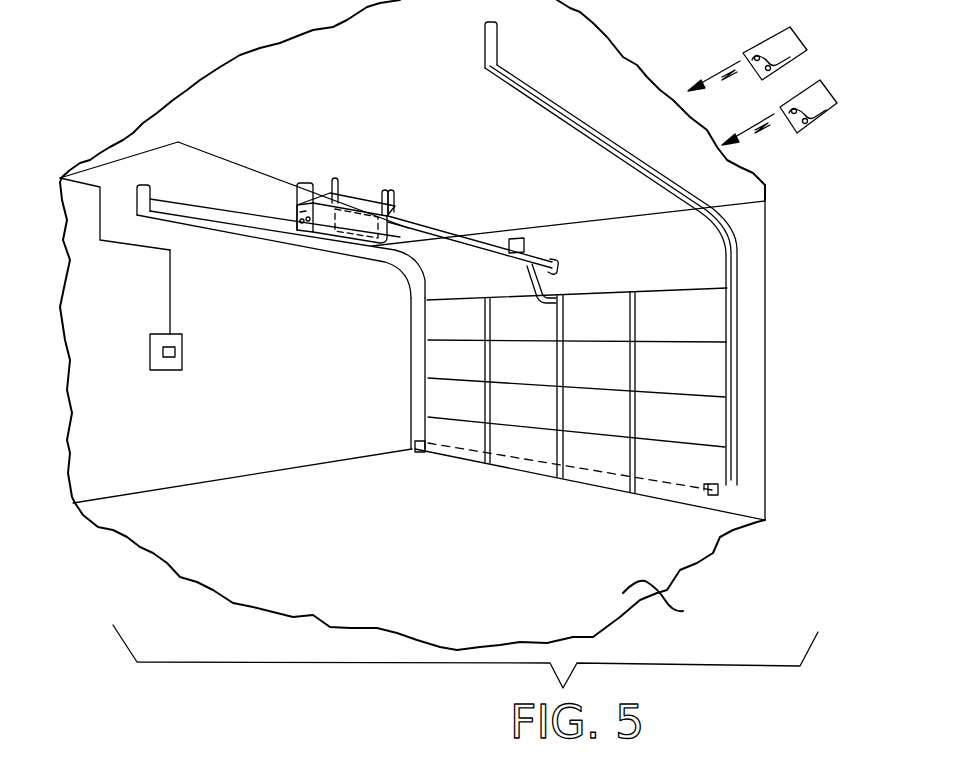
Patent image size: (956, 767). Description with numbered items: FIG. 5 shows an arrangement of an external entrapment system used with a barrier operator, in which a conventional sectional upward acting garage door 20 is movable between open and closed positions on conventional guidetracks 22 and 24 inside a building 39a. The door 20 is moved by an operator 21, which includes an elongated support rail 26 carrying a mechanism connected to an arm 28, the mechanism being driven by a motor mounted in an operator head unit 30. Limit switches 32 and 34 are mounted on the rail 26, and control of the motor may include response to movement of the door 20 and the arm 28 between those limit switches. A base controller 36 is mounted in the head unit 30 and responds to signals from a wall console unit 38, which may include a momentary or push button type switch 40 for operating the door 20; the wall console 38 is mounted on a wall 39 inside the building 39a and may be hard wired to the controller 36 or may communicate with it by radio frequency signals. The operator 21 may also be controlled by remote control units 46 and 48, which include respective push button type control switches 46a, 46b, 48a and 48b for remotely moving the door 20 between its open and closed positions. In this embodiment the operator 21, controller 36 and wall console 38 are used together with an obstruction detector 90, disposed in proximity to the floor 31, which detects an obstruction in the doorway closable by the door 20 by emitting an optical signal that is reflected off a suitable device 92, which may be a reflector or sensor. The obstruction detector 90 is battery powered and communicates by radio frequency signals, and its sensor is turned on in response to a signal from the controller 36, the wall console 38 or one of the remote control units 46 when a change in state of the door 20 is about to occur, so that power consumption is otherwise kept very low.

The garage door 20 is at (594, 479).
The operator 21 is at (380, 162).
The guidetrack 22 is at (180, 225).
The guidetrack 24 is at (520, 100).
The rail 26 is at (452, 234).
The arm 28 is at (519, 274).
The operator head unit 30 is at (345, 240).
The floor 31 is at (412, 325).
The limit switch 32 is at (393, 214).
The limit switch 34 is at (518, 238).
The base controller 36 is at (364, 208).
The wall console unit 38 is at (148, 352).
The wall 39 is at (68, 455).
The building 39a is at (221, 68).
The push button type switch 40 is at (182, 352).
The remote control unit 46 is at (772, 37).
The push button type control switch 46a is at (745, 55).
The push button type control switch 46b is at (775, 72).
The remote control unit 48 is at (824, 106).
The push button type control switch 48a is at (780, 102).
The push button type control switch 48b is at (810, 128).
The obstruction detector 90 is at (413, 453).
The reflector or sensor 92 is at (712, 498).